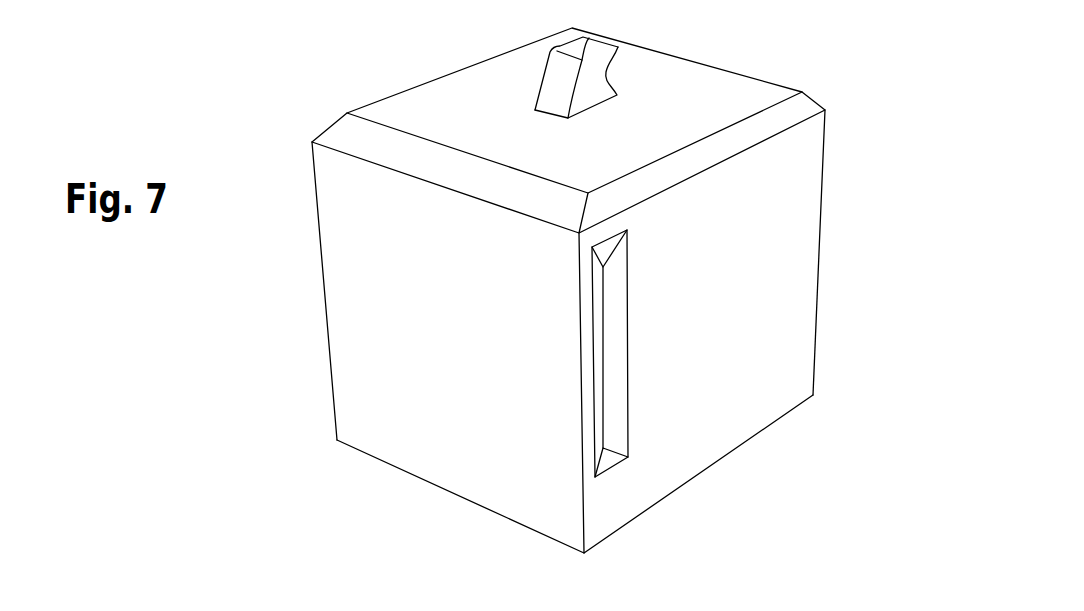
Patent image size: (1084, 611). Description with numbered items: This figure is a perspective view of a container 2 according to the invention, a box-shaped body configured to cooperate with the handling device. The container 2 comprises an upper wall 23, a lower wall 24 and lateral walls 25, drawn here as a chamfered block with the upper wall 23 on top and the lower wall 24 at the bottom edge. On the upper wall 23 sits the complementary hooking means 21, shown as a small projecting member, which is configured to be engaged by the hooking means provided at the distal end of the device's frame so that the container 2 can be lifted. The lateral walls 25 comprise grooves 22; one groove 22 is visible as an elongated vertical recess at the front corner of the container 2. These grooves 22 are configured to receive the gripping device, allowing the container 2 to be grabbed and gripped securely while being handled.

The container 2 is at (576, 283).
The complementary hooking means 21 is at (590, 43).
The grooves 22 is at (615, 407).
The upper wall 23 is at (697, 108).
The lower wall 24 is at (742, 445).
The lateral walls 25 is at (378, 298).